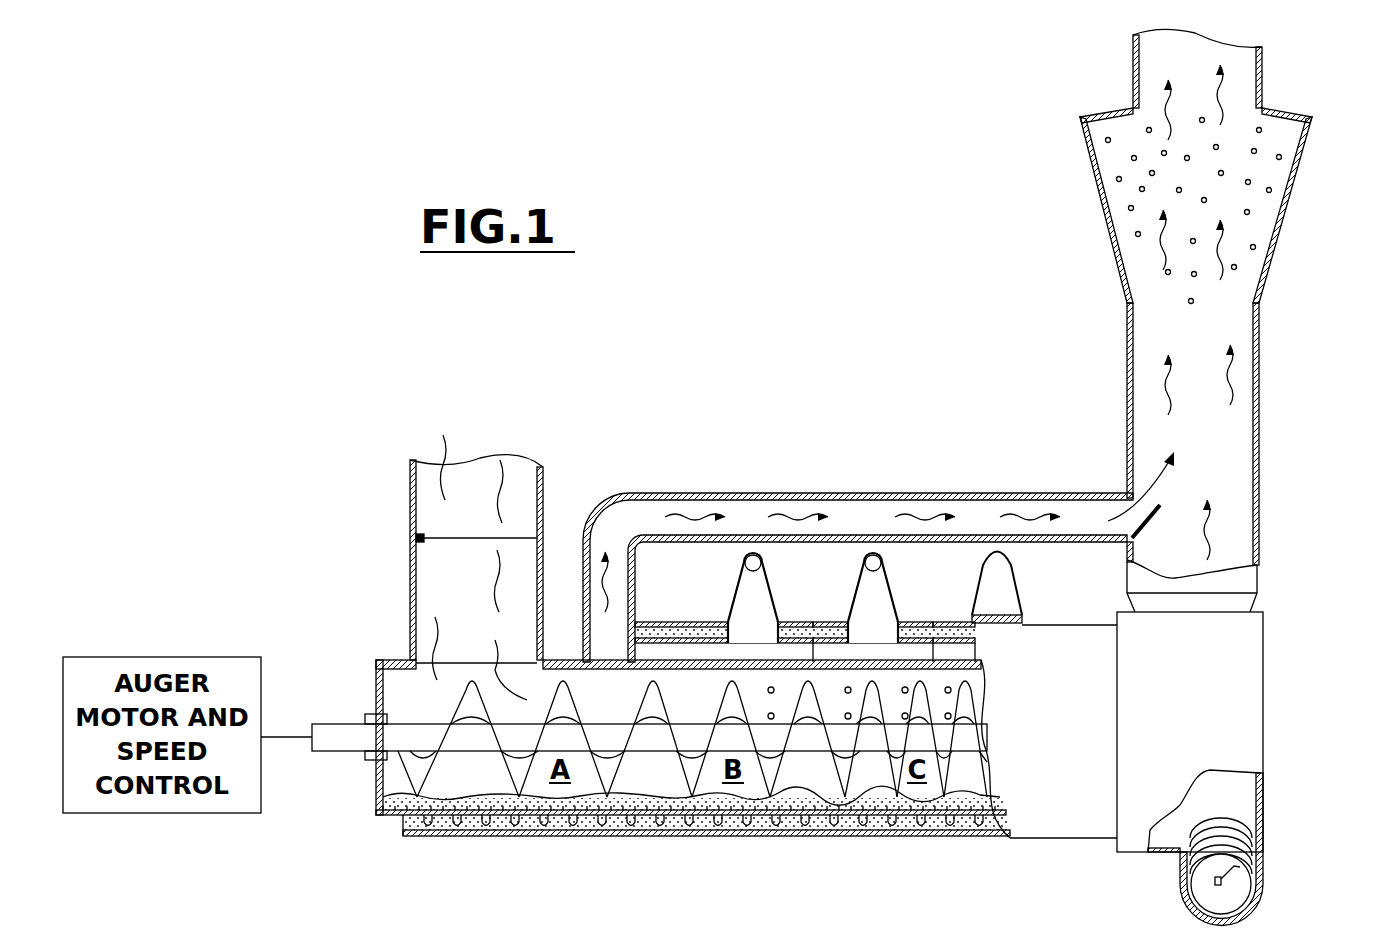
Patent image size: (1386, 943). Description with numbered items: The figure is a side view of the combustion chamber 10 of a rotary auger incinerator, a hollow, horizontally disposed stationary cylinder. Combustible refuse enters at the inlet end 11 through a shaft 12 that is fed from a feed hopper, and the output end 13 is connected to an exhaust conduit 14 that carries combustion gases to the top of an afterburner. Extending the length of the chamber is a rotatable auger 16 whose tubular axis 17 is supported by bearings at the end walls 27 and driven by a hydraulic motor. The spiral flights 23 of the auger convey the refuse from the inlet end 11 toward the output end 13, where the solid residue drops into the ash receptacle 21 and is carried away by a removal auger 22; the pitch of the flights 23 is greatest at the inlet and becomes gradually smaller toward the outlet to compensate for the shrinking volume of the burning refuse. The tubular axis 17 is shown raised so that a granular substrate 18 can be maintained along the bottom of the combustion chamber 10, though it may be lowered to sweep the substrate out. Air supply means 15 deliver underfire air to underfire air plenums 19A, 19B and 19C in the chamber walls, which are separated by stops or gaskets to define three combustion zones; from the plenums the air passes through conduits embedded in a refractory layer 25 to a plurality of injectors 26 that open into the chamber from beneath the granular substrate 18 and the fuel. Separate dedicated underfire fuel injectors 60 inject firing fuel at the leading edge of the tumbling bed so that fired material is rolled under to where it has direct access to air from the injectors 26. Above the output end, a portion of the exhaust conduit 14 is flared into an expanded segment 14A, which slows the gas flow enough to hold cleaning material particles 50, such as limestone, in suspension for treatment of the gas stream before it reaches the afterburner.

The combustion chamber 10 is at (390, 812).
The inlet end 11 is at (402, 688).
The shaft 12 is at (418, 538).
The output end 13 is at (1228, 712).
The exhaust conduit 14 is at (1258, 542).
The expanded segment 14A is at (1096, 190).
The air supply means 15 is at (873, 552).
The rotatable auger 16 is at (692, 781).
The tubular axis 17 is at (335, 753).
The granular substrate 18 is at (898, 818).
The underfire air plenum 19A is at (692, 650).
The underfire air plenum 19B is at (851, 660).
The underfire air plenum 19C is at (950, 652).
The ash receptacle 21 is at (1264, 855).
The removal auger 22 is at (1200, 878).
The spiral flights 23 is at (603, 768).
The refractory layer 25 is at (668, 835).
The injectors 26 is at (462, 835).
The end walls 27 is at (378, 782).
The cleaning material particles 50 is at (1255, 181).
The underfire fuel injectors 60 is at (618, 830).